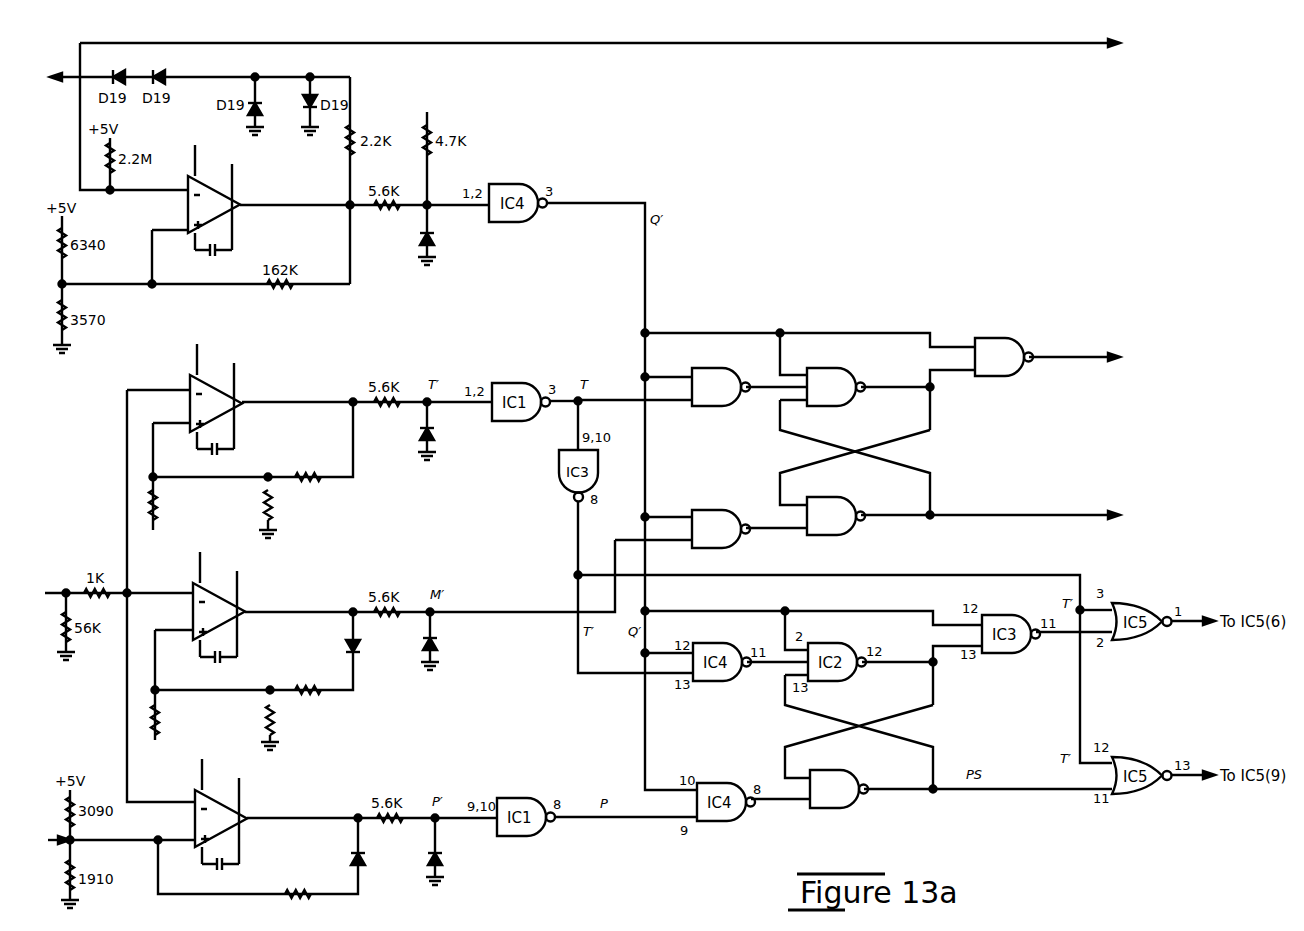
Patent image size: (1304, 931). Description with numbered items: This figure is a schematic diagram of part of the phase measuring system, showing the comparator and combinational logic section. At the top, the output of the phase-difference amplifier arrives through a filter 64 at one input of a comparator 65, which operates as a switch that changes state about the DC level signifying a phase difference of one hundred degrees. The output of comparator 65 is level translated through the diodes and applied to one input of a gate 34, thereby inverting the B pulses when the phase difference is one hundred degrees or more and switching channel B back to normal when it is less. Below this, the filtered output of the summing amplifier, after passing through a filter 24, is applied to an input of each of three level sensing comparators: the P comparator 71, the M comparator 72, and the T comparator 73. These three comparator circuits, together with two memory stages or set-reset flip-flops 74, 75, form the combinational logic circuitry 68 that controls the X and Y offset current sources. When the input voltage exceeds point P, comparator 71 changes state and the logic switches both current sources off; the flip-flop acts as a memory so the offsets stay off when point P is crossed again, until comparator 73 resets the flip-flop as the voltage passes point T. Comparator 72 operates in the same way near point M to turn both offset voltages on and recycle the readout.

The comparator 65 is at (182, 204).
The T comparator 73 is at (180, 402).
The M comparator 72 is at (184, 610).
The P comparator 71 is at (188, 817).
The combinational logic circuitry 68 is at (786, 295).
The set-reset flip-flop 75 is at (843, 536).
The set-reset flip-flop 74 is at (843, 808).
The filter 64 is at (622, 44).
The gate 34 is at (177, 78).
The filter 24 is at (43, 838).